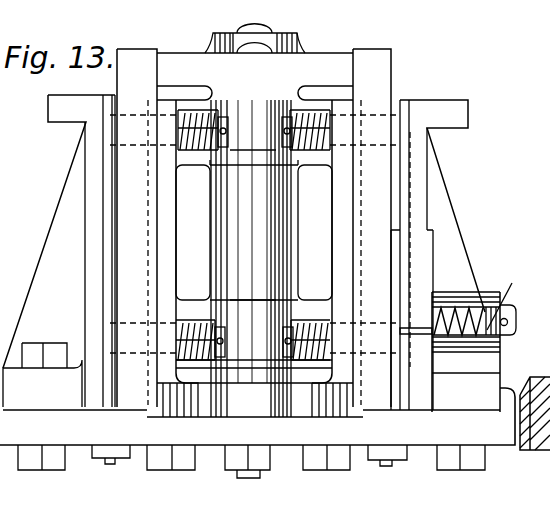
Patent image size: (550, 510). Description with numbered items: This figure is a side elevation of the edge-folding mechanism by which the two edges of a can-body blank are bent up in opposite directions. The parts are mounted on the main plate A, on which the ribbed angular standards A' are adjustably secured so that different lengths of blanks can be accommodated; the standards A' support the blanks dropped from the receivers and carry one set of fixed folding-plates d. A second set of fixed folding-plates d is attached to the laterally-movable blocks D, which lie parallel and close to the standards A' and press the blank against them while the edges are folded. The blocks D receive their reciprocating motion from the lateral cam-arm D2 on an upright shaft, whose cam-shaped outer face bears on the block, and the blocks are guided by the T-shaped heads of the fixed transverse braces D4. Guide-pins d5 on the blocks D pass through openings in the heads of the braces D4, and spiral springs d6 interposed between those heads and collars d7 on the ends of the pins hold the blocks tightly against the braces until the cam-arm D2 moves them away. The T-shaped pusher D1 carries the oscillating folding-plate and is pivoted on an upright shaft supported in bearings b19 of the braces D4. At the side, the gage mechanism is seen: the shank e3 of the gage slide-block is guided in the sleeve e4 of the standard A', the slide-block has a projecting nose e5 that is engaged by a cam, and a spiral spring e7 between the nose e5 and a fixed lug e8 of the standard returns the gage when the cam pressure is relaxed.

The main plate A is at (257, 433).
The ribbed angular standard A' is at (244, 251).
The fixed folding-plate d is at (259, 252).
The laterally-movable block D is at (255, 228).
The lateral cam-arm D2 is at (255, 220).
The transverse brace D4 is at (170, 232).
The T-shaped pusher D1 is at (238, 240).
The bearing b19 is at (253, 224).
The guide-pin d5 is at (232, 128).
The spiral spring d6 is at (253, 237).
The collar d7 is at (294, 307).
The sleeve e4 is at (466, 344).
The shank e3 is at (510, 322).
The fixed lug e8 is at (503, 299).
The projecting nose e5 is at (436, 352).
The spiral spring e7 is at (458, 318).